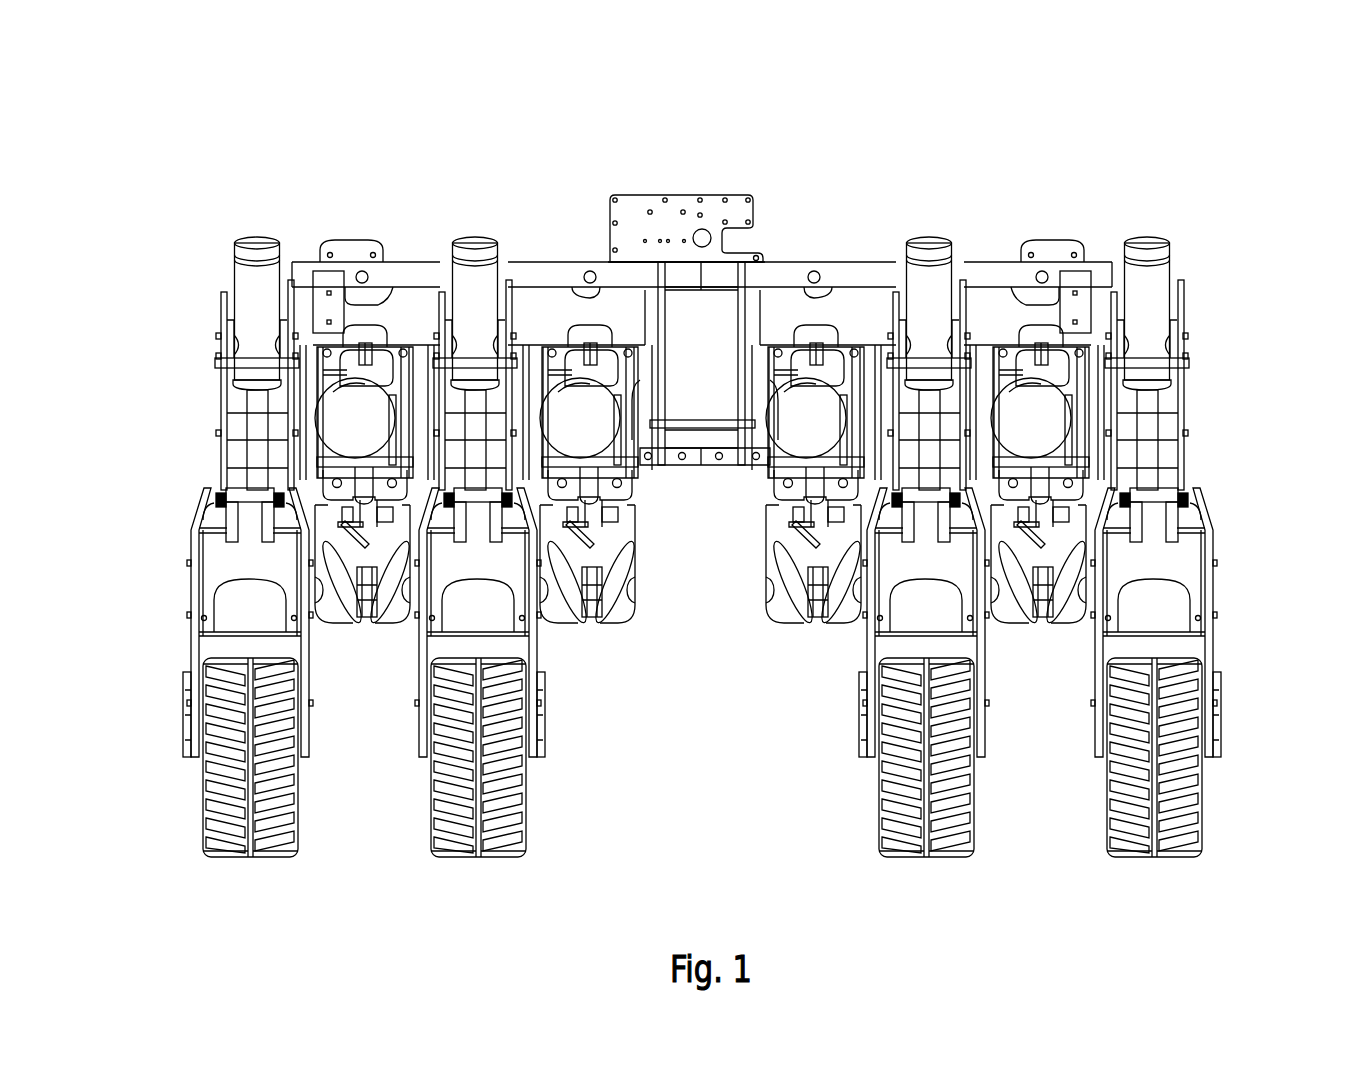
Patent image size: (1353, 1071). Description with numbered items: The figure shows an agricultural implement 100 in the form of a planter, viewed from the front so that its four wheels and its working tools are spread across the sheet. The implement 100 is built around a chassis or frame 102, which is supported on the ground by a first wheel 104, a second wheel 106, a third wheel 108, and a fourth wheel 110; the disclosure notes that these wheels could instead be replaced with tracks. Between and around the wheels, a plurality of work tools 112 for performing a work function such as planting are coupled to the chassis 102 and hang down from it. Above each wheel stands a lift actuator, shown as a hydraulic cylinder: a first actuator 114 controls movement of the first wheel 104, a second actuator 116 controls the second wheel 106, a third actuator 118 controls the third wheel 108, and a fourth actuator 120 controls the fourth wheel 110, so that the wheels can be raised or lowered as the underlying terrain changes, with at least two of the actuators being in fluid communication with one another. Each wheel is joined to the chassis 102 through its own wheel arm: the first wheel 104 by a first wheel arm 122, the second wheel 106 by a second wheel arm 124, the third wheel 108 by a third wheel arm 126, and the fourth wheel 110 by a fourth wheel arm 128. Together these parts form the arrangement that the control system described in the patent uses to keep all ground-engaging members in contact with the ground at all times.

The agricultural implement 100 is at (303, 190).
The chassis or frame 102 is at (843, 272).
The first wheel 104 is at (237, 860).
The second wheel 106 is at (490, 860).
The third wheel 108 is at (907, 858).
The fourth wheel 110 is at (1165, 860).
The work tools 112 is at (365, 636).
The first actuator 114 is at (226, 261).
The second actuator 116 is at (488, 228).
The third actuator 118 is at (940, 228).
The fourth actuator 120 is at (1180, 262).
The first wheel arm 122 is at (192, 640).
The second wheel arm 124 is at (538, 716).
The third wheel arm 126 is at (868, 736).
The fourth wheel arm 128 is at (1215, 650).